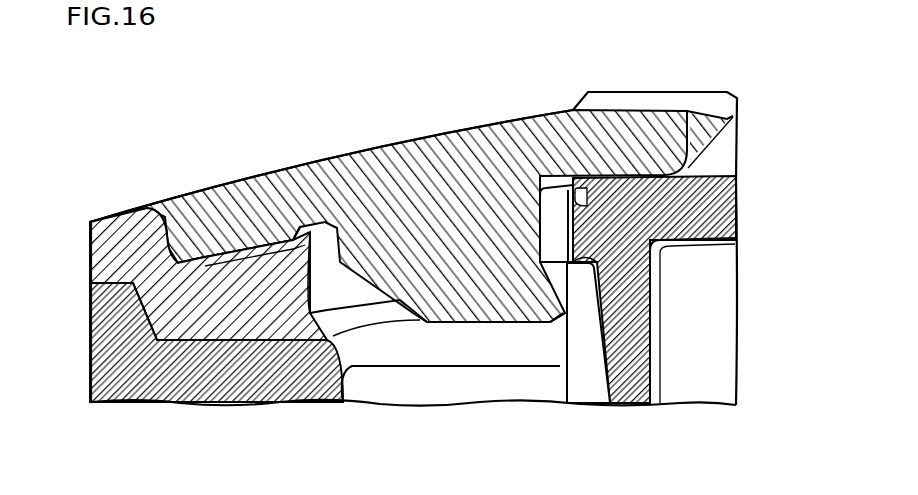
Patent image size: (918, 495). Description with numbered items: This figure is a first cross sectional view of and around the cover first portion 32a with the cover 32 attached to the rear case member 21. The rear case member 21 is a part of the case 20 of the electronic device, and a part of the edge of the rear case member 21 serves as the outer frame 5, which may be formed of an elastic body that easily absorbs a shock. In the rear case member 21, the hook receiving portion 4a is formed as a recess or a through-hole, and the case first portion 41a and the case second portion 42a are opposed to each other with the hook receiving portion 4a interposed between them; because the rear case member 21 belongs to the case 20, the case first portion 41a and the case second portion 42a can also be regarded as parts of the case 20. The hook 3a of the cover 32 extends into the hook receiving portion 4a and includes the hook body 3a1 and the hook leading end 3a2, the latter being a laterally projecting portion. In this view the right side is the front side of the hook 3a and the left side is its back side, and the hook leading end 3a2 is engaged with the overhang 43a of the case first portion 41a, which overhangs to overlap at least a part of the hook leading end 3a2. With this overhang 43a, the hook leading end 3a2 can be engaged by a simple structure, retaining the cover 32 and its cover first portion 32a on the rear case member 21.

The outer frame 5 is at (128, 240).
The case second portion 42a is at (247, 270).
The cover 32 is at (388, 204).
The cover first portion 32a is at (447, 162).
The overhang 43a is at (583, 217).
The case first portion 41a is at (640, 227).
The case 20 is at (656, 213).
The rear case member 21 is at (710, 84).
The hook receiving portion 4a is at (352, 297).
The hook body 3a1 is at (490, 230).
The hook leading end 3a2 is at (560, 283).
The hook 3a is at (518, 353).